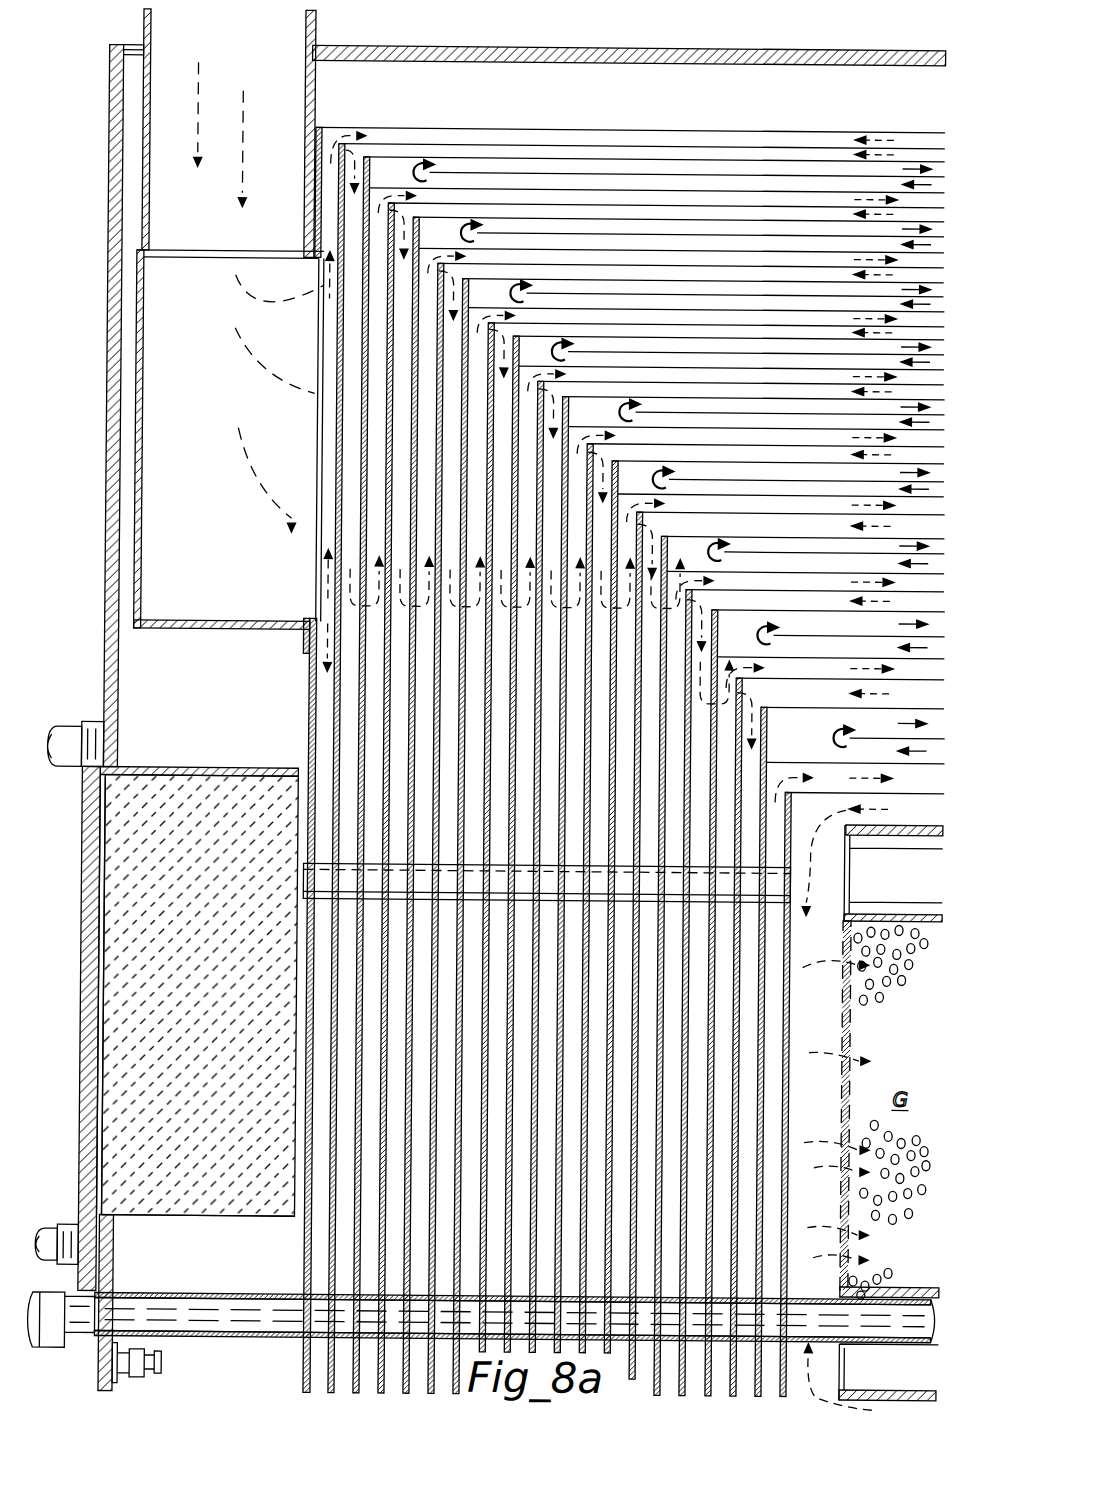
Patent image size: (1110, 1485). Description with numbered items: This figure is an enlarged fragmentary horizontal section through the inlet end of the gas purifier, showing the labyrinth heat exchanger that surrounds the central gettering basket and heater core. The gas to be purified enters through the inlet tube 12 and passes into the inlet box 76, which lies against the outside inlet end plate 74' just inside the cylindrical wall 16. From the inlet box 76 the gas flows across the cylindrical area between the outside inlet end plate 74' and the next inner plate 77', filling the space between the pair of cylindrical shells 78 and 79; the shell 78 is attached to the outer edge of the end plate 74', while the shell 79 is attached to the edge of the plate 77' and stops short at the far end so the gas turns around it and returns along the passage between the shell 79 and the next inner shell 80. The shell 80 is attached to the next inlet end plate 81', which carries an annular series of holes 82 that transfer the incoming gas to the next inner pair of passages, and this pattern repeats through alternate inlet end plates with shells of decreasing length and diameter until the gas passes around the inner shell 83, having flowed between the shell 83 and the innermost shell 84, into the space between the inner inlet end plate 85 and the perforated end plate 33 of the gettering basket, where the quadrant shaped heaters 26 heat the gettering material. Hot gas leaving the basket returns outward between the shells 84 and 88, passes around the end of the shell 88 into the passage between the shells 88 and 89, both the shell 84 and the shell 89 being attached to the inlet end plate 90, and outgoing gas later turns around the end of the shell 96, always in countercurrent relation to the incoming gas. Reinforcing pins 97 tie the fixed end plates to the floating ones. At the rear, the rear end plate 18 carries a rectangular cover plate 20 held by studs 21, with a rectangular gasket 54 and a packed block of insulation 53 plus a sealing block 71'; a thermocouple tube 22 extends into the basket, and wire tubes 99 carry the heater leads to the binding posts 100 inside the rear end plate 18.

The inlet tube 12 is at (148, 50).
The cylindrical wall 16 is at (491, 47).
The rear end plate 18 is at (113, 672).
The rectangular cover plate 20 is at (84, 1172).
The studs 21 is at (100, 1240).
The thermocouple tube 22 is at (284, 1320).
The heaters 26 is at (910, 884).
The perforated end plate 33 is at (853, 1015).
The block of insulation 53 is at (240, 1220).
The rectangular gasket 54 is at (100, 712).
The sealing block 71' is at (197, 979).
The outside inlet end plate 74' is at (276, 392).
The inlet box 76 is at (141, 565).
The inner plate 77' is at (275, 1005).
The cylindrical shell 78 is at (575, 129).
The cylindrical shell 79 is at (648, 145).
The inner shell 80 is at (472, 157).
The inlet end plate 81' is at (299, 768).
The holes 82 is at (365, 612).
The inner shell 83 is at (904, 795).
The inner shell 84 is at (918, 763).
The inner inlet end plate 85 is at (789, 1103).
The outer shell 88 is at (862, 738).
The outer shell 89 is at (780, 704).
The inlet end plate 90 is at (768, 738).
The shell 96 is at (550, 366).
The reinforcing pins 97 is at (897, 1290).
The wire tubes 99 is at (790, 905).
The binding posts 100 is at (168, 1366).